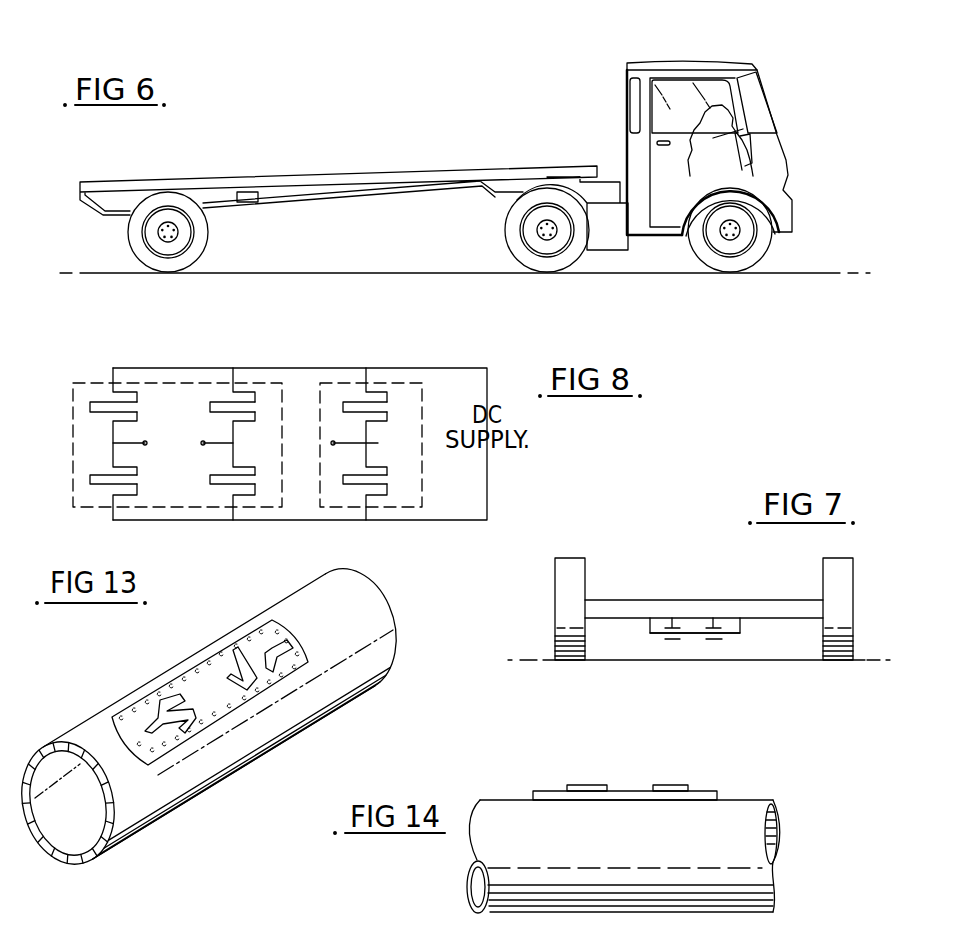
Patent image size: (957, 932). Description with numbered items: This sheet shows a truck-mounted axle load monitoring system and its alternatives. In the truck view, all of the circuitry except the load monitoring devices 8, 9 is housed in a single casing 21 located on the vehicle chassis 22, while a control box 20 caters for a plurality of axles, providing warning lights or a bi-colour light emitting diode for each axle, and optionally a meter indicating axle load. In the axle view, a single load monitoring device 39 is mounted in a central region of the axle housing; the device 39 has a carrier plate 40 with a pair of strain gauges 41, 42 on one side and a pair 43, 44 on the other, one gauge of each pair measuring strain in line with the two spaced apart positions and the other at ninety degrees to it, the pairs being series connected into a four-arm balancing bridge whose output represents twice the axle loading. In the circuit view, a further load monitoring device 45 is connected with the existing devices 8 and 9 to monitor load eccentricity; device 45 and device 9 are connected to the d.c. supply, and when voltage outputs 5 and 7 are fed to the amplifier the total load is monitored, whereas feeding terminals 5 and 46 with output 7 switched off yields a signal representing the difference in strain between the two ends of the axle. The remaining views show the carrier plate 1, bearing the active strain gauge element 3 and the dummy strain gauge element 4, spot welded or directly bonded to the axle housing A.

In FIG. 8, the carrier plate 1 is at (73, 483).
In FIG. 13, the carrier plate 1 is at (152, 691).
In FIG. 14, the carrier plate 1 is at (620, 791).
In FIG. 8, the strain gauge element 3 is at (210, 408).
In FIG. 13, the strain gauge element 3 is at (132, 746).
In FIG. 14, the strain gauge element 3 is at (580, 785).
In FIG. 8, the strain gauge element 4 is at (137, 407).
In FIG. 13, the strain gauge element 4 is at (291, 642).
In FIG. 14, the strain gauge element 4 is at (658, 785).
In FIG. 8, the voltage output 5 is at (331, 442).
In FIG. 8, the voltage output 7 is at (201, 443).
In FIG. 8, the load monitoring device 8 is at (338, 389).
In FIG. 8, the load monitoring device 9 is at (210, 389).
In FIG. 6, the control box 20 is at (790, 192).
In FIG. 6, the casing 21 is at (248, 202).
In FIG. 6, the vehicle chassis 22 is at (357, 207).
In FIG. 7, the load monitoring device 39 is at (753, 641).
In FIG. 7, the carrier plate 40 is at (652, 632).
In FIG. 7, the strain gauge 41 is at (673, 626).
In FIG. 7, the strain gauge 42 is at (715, 626).
In FIG. 7, the strain gauge 43 is at (676, 641).
In FIG. 7, the strain gauge 44 is at (713, 641).
In FIG. 8, the load monitoring device 45 is at (153, 387).
In FIG. 8, the terminal 46 is at (147, 443).
In FIG. 6, the axle / pipe A is at (158, 237).
In FIG. 7, the axle / pipe A is at (600, 608).
In FIG. 13, the axle / pipe A is at (78, 728).
In FIG. 14, the axle / pipe A is at (492, 802).